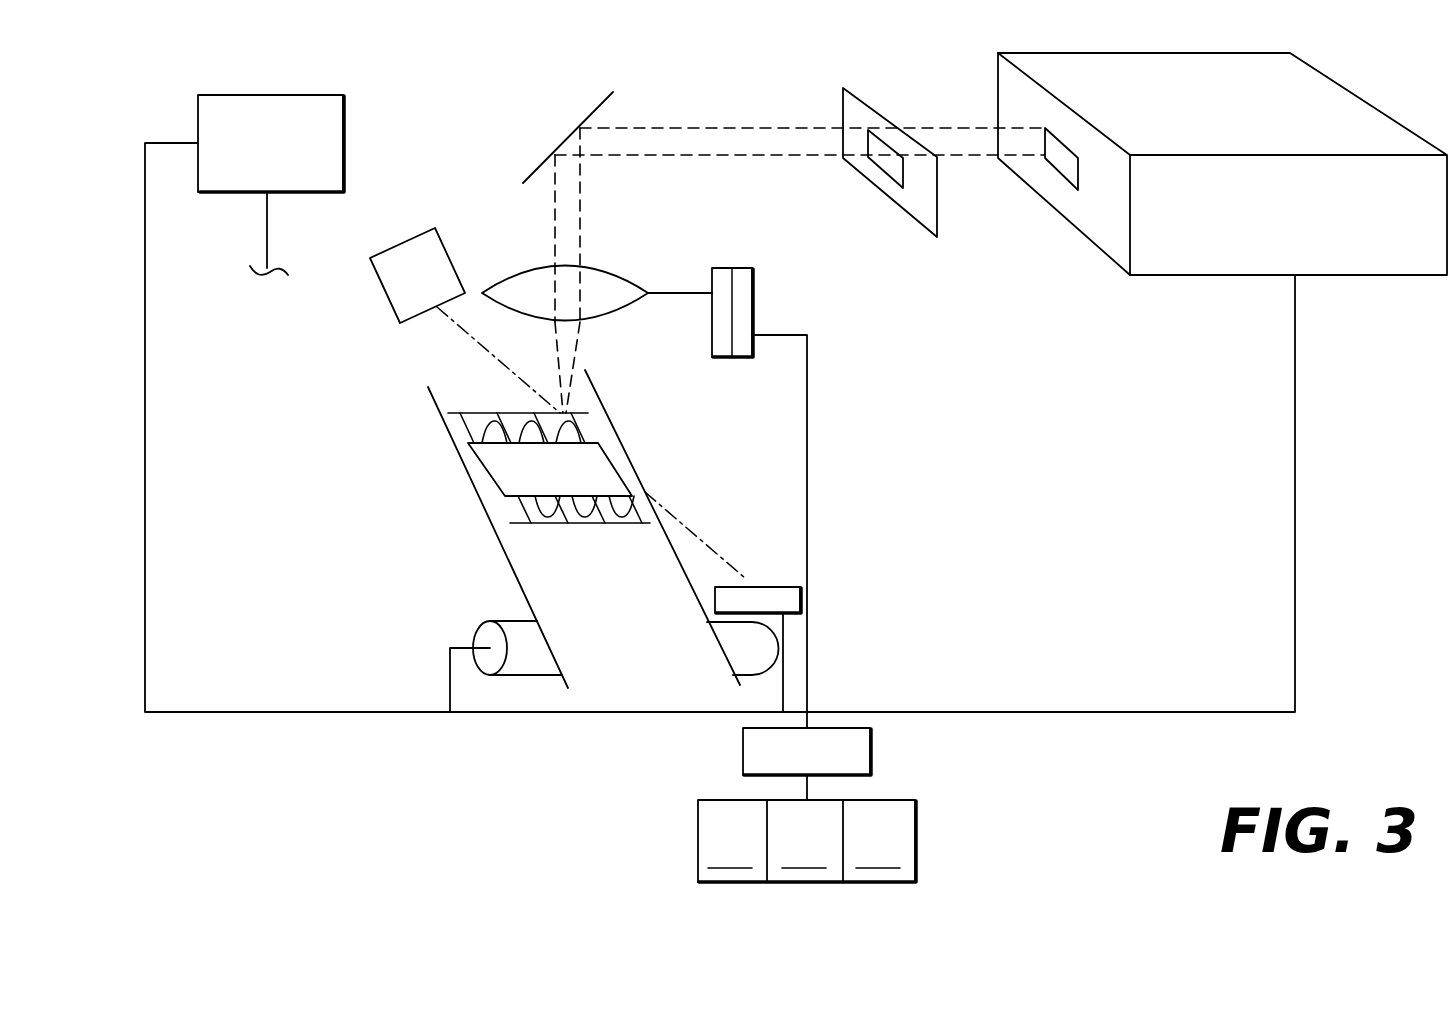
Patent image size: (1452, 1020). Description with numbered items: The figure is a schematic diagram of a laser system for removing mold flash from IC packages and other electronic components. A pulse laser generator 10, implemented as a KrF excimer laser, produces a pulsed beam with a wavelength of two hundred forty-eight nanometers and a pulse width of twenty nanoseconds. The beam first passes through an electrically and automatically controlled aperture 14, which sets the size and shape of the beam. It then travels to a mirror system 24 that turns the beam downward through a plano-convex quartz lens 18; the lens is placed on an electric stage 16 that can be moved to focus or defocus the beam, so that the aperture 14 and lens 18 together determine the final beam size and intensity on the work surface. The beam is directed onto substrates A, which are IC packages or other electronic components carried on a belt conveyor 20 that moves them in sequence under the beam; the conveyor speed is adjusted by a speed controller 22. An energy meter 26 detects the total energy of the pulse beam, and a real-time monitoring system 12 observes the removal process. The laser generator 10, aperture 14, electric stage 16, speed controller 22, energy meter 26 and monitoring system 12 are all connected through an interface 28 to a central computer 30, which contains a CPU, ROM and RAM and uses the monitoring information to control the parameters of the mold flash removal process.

The pulse laser generator 10 is at (1015, 92).
The real-time monitoring system 12 is at (407, 281).
The aperture 14 is at (843, 110).
The electric stage 16 is at (752, 294).
The plano-convex quartz lens 18 is at (598, 268).
The belt conveyor 20 is at (436, 423).
The speed controller 22 is at (520, 622).
The mirror system 24 is at (563, 141).
The energy meter 26 is at (256, 94).
The interface 28 is at (743, 750).
The central computer 30 is at (898, 796).
The substrates A is at (523, 468).